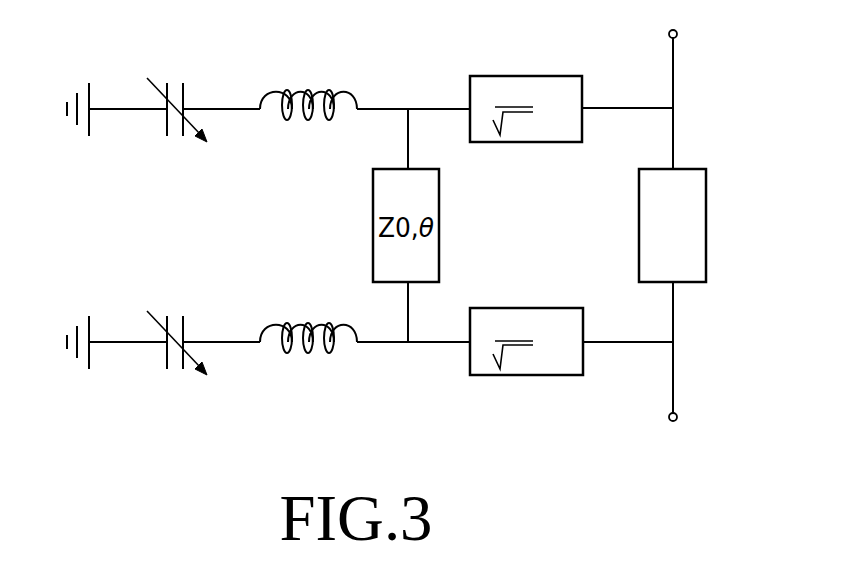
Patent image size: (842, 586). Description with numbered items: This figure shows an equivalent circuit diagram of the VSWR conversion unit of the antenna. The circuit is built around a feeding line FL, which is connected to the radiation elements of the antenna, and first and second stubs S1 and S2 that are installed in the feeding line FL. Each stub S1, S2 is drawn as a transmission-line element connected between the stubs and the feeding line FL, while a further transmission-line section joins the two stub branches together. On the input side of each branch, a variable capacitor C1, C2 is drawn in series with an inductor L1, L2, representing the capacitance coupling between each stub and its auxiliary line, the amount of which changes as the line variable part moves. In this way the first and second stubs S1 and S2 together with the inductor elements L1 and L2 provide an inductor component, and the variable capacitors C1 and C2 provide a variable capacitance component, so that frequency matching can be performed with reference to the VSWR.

The first variable capacitor C1 is at (163, 125).
The second variable capacitor C2 is at (163, 358).
The first inductor L1 is at (308, 125).
The second inductor L2 is at (308, 360).
The first stub S1 is at (523, 76).
The second stub S2 is at (527, 376).
The feeding line FL is at (706, 226).